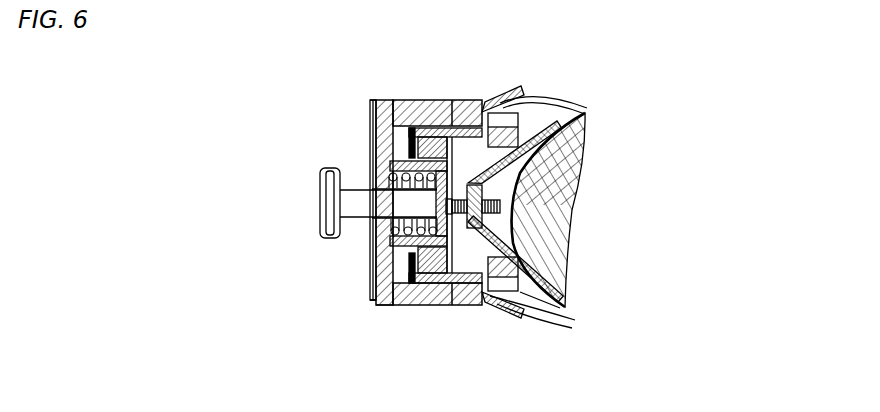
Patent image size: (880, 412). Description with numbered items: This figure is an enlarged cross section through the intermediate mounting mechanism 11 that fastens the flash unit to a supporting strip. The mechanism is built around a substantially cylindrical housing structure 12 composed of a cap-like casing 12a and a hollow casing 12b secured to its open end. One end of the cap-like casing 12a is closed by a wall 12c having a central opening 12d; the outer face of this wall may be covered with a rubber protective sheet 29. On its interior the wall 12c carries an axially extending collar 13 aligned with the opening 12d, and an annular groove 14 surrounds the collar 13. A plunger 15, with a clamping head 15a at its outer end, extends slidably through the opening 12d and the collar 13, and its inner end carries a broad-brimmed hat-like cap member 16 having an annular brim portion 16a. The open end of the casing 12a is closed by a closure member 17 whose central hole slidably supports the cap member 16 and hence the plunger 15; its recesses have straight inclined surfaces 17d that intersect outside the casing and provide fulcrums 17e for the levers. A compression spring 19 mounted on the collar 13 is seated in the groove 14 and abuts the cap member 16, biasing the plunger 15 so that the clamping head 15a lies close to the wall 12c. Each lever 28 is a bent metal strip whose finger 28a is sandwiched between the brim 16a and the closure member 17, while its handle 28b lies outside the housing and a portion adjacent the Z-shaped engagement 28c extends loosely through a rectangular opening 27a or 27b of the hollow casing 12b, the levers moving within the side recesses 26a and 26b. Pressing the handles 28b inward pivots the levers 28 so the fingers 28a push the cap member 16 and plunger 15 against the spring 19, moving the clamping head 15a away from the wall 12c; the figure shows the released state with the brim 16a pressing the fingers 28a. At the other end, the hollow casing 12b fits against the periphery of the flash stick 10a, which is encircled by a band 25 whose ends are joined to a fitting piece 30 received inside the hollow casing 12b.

The flash stick 10a is at (553, 253).
The mounting mechanism 11 is at (376, 100).
The housing structure 12 is at (385, 102).
The cap-like casing 12a is at (403, 110).
The hollow casing 12b is at (533, 307).
The wall 12c is at (371, 295).
The central opening 12d is at (397, 240).
The collar 13 is at (420, 255).
The annular groove 14 is at (382, 266).
The plunger 15 is at (353, 202).
The clamping head 15a is at (322, 207).
The cap member 16 is at (400, 170).
The annular brim portion 16a is at (407, 152).
The closure member 17 is at (460, 157).
The inclined surfaces 17d is at (454, 116).
The fulcrums 17e is at (426, 148).
The compression spring 19 is at (373, 302).
The band 25 is at (525, 290).
The side recess 26a is at (540, 116).
The side recess 26b is at (522, 302).
The rectangular opening 27a is at (490, 298).
The rectangular opening 27b is at (519, 121).
The lever 28 is at (490, 104).
The finger 28a is at (410, 130).
The handle 28b is at (519, 93).
The engagement 28c is at (518, 100).
The protective sheet 29 is at (367, 295).
The fitting piece 30 is at (482, 190).